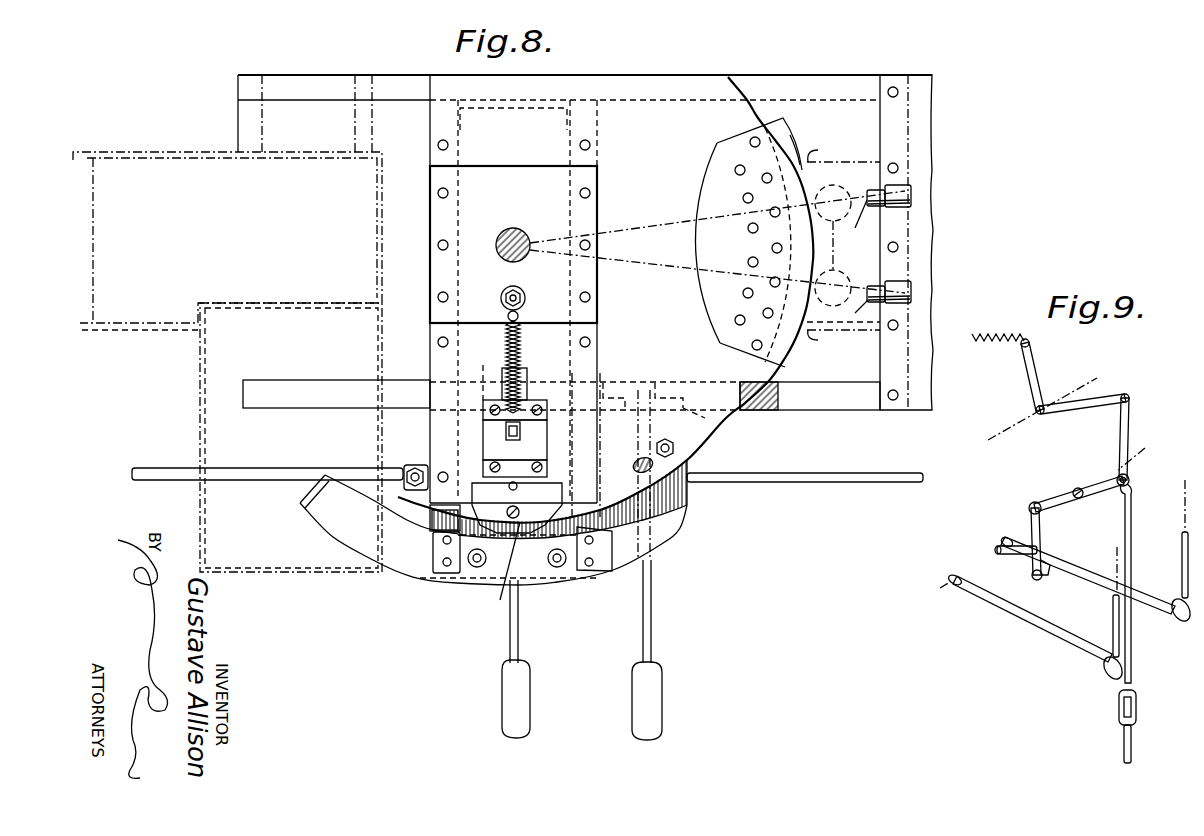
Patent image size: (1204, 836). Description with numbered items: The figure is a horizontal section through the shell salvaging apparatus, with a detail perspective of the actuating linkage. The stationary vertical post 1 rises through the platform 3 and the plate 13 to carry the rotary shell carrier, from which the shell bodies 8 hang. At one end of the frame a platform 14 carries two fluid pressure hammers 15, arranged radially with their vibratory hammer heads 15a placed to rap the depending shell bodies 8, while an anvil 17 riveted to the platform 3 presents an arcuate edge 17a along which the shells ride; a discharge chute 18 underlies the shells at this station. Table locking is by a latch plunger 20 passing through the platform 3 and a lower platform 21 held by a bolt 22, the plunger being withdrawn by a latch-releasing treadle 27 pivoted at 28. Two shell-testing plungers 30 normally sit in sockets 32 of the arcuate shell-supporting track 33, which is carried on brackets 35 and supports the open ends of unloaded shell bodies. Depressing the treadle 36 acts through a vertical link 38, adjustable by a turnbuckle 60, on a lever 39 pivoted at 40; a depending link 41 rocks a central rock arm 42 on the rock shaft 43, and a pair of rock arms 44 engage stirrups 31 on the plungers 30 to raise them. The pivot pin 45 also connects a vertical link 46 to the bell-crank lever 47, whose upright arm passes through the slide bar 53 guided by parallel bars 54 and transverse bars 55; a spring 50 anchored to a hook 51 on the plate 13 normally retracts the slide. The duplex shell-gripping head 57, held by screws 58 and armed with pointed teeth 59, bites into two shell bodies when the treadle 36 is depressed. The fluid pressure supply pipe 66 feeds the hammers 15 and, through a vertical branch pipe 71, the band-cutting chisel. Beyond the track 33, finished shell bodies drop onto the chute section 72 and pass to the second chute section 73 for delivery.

In FIG. 8, the stationary vertical post 1 is at (503, 232).
In FIG. 8, the platform 3 is at (430, 124).
In FIG. 8, the shell body 8 is at (833, 245).
In FIG. 8, the plate 13 is at (512, 166).
In FIG. 8, the platform 14 is at (918, 127).
In FIG. 8, the fluid pressure hammer 15 is at (912, 193).
In FIG. 8, the vibratory hammer head 15a is at (866, 264).
In FIG. 8, the anvil 17 is at (722, 330).
In FIG. 8, the arcuate edge 17a is at (795, 142).
In FIG. 8, the vertical discharge chute 18 is at (822, 162).
In FIG. 8, the latch bolt or plunger 20 is at (640, 460).
In FIG. 8, the lower platform 21 is at (680, 538).
In FIG. 8, the bolt 22 is at (676, 450).
In FIG. 8, the latch-releasing treadle 27 is at (660, 676).
In FIG. 8, the pivot 28 is at (694, 424).
In FIG. 8, the shell-testing plunger 30 is at (476, 568).
In FIG. 9, the shell-testing plunger 30 is at (1112, 620).
In FIG. 9, the stirrup or loop 31 is at (1106, 680).
In FIG. 8, the socket 32 is at (433, 545).
In FIG. 8, the shell-supporting track 33 is at (416, 570).
In FIG. 8, the bracket 35 is at (432, 512).
In FIG. 8, the treadle 36 is at (531, 690).
In FIG. 9, the vertical link 38 is at (1133, 742).
In FIG. 9, the lever 39 is at (1066, 494).
In FIG. 9, the pivot 40 is at (1078, 499).
In FIG. 9, the depending link 41 is at (1046, 568).
In FIG. 9, the central rock arm 42 is at (997, 550).
In FIG. 9, the rock shaft 43 is at (1020, 528).
In FIG. 8, the rock arm 44 is at (560, 410).
In FIG. 9, the rock arm 44 is at (1030, 616).
In FIG. 9, the pivot pin 45 is at (1130, 491).
In FIG. 9, the vertical link 46 is at (1120, 432).
In FIG. 8, the bell-crank lever 47 is at (506, 432).
In FIG. 9, the bell-crank lever 47 is at (1072, 398).
In FIG. 8, the spring 50 is at (524, 350).
In FIG. 9, the spring 50 is at (998, 323).
In FIG. 8, the hook 51 is at (522, 308).
In FIG. 8, the slide bar 53 is at (527, 390).
In FIG. 8, the parallel bar 54 is at (547, 450).
In FIG. 8, the transverse bar 55 is at (490, 400).
In FIG. 8, the duplex shell-gripping head 57 is at (517, 508).
In FIG. 8, the screw 58 is at (500, 574).
In FIG. 8, the pointed stud or tooth 59 is at (528, 552).
In FIG. 9, the turnbuckle 60 is at (1137, 698).
In FIG. 8, the fluid pressure supply pipe line 66 is at (240, 468).
In FIG. 8, the vertical branch pipe 71 is at (414, 468).
In FIG. 8, the chute section 72 is at (208, 345).
In FIG. 8, the second chute section 73 is at (140, 160).